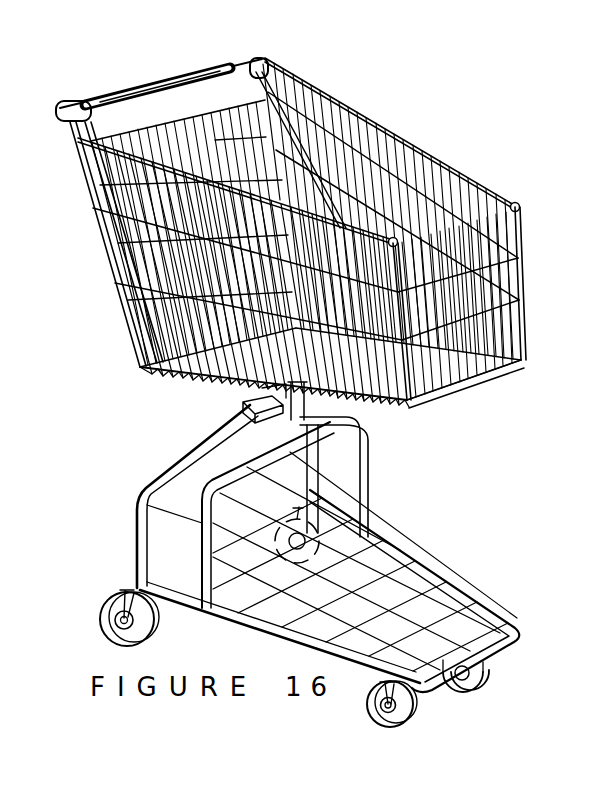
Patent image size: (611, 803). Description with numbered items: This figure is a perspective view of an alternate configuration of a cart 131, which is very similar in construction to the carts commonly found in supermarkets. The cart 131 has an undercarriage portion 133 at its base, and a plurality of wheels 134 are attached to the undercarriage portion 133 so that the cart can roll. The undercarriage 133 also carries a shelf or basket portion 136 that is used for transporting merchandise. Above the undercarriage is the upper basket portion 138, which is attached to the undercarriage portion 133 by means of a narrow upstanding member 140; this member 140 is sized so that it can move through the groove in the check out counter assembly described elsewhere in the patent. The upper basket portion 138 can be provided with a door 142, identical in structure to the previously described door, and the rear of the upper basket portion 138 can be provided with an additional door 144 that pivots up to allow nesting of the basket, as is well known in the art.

The cart 131 is at (458, 158).
The undercarriage portion 133 is at (378, 468).
The wheels 134 is at (275, 540).
The shelf or basket portion 136 is at (432, 557).
The upper basket portion 138 is at (370, 163).
The narrow upstanding member 140 is at (257, 398).
The door 142 is at (490, 287).
The additional door 144 is at (323, 113).